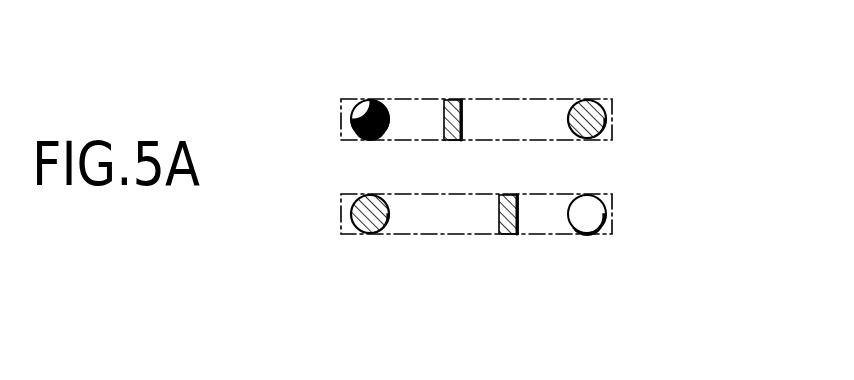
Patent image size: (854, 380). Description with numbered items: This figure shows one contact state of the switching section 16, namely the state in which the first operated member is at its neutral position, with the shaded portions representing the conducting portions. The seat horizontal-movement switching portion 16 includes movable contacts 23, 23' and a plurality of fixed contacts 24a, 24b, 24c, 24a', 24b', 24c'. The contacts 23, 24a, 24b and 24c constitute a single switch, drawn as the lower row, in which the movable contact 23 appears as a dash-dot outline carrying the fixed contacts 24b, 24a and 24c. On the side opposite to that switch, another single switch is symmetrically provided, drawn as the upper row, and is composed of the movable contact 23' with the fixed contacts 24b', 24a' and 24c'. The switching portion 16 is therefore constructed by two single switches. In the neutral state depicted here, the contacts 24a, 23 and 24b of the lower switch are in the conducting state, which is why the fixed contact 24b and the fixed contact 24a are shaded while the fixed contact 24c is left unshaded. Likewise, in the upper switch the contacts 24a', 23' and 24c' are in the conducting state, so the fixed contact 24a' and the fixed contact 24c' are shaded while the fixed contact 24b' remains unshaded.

The switching section 16 is at (320, 176).
The movable contact 23 is at (540, 249).
The movable contact 23' is at (510, 77).
The fixed contact 24a is at (527, 260).
The fixed contact 24a' is at (474, 72).
The fixed contact 24b is at (389, 262).
The fixed contact 24b' is at (332, 79).
The fixed contact 24c is at (641, 202).
The fixed contact 24c' is at (644, 103).